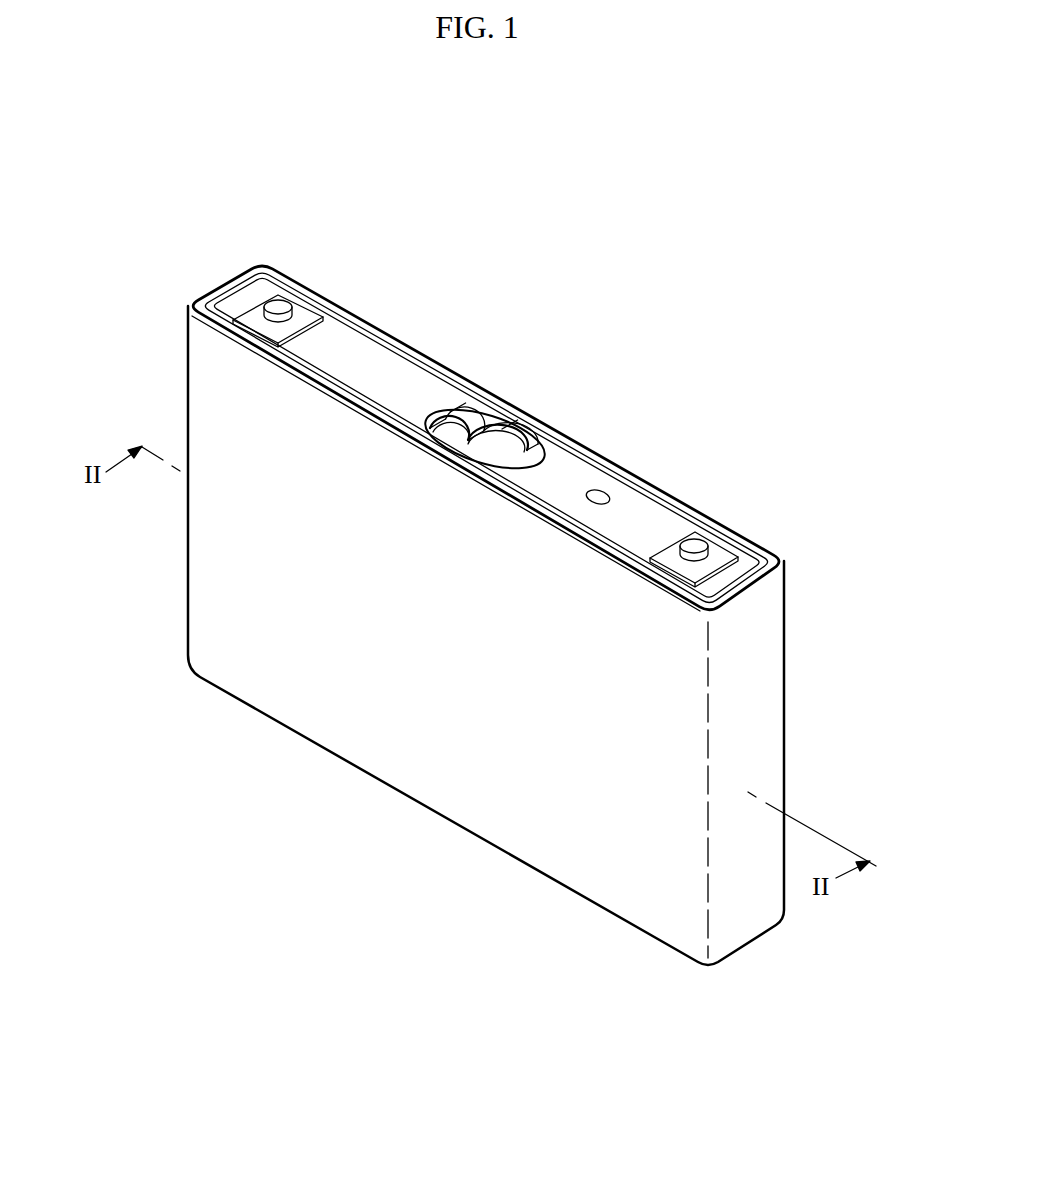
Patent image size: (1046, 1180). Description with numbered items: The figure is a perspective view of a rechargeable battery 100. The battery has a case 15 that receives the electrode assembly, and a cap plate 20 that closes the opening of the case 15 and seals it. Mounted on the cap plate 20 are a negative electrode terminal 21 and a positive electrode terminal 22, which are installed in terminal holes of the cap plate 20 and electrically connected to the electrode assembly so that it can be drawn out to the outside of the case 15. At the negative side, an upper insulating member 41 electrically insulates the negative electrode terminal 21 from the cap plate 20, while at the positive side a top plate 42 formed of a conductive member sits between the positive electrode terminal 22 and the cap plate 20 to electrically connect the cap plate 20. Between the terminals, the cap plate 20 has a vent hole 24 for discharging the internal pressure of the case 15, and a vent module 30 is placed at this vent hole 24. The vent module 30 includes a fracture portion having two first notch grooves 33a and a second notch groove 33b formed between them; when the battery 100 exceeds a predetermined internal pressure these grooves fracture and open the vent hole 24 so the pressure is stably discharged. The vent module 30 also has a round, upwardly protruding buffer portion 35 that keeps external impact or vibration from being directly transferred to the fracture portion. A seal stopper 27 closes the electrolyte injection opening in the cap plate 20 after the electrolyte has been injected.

The rechargeable battery 100 is at (663, 313).
The case 15 is at (412, 757).
The cap plate 20 is at (367, 362).
The negative electrode terminal 21 is at (287, 303).
The positive electrode terminal 22 is at (714, 545).
The vent hole 24 is at (433, 420).
The seal stopper 27 is at (600, 496).
The vent module 30 is at (521, 366).
The first notch grooves 33a is at (448, 412).
The second notch groove 33b is at (480, 440).
The buffer portion 35 is at (475, 422).
The upper insulating member 41 is at (250, 318).
The top plate 42 is at (698, 570).